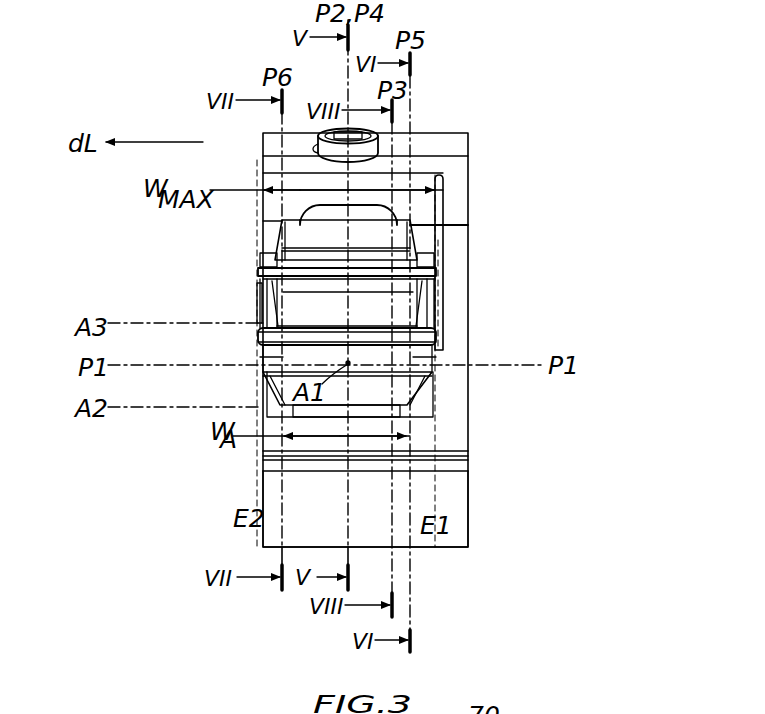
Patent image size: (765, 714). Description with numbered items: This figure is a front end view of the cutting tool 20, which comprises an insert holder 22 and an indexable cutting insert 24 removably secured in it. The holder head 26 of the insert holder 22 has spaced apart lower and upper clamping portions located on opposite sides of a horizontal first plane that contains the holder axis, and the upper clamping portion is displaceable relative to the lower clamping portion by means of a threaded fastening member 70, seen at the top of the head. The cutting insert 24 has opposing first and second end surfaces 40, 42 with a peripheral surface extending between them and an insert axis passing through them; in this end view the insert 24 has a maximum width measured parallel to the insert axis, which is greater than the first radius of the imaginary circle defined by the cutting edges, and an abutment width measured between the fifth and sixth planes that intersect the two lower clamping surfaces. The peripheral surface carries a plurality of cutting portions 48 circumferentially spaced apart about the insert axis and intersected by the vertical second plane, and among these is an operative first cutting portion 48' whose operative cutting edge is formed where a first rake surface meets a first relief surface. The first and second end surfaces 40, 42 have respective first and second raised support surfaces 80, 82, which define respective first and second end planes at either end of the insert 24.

The cutting tool 20 is at (490, 157).
The insert holder 22 is at (449, 317).
The cutting insert 24 is at (306, 262).
The holder head 26 is at (449, 494).
The first end surface 40 is at (441, 370).
The second end surface 42 is at (253, 292).
The cutting portions 48 is at (423, 325).
The operative first cutting portion 48' is at (409, 255).
The threaded fastening member 70 is at (360, 153).
The first raised support surface 80 is at (433, 358).
The second raised support surface 82 is at (257, 312).